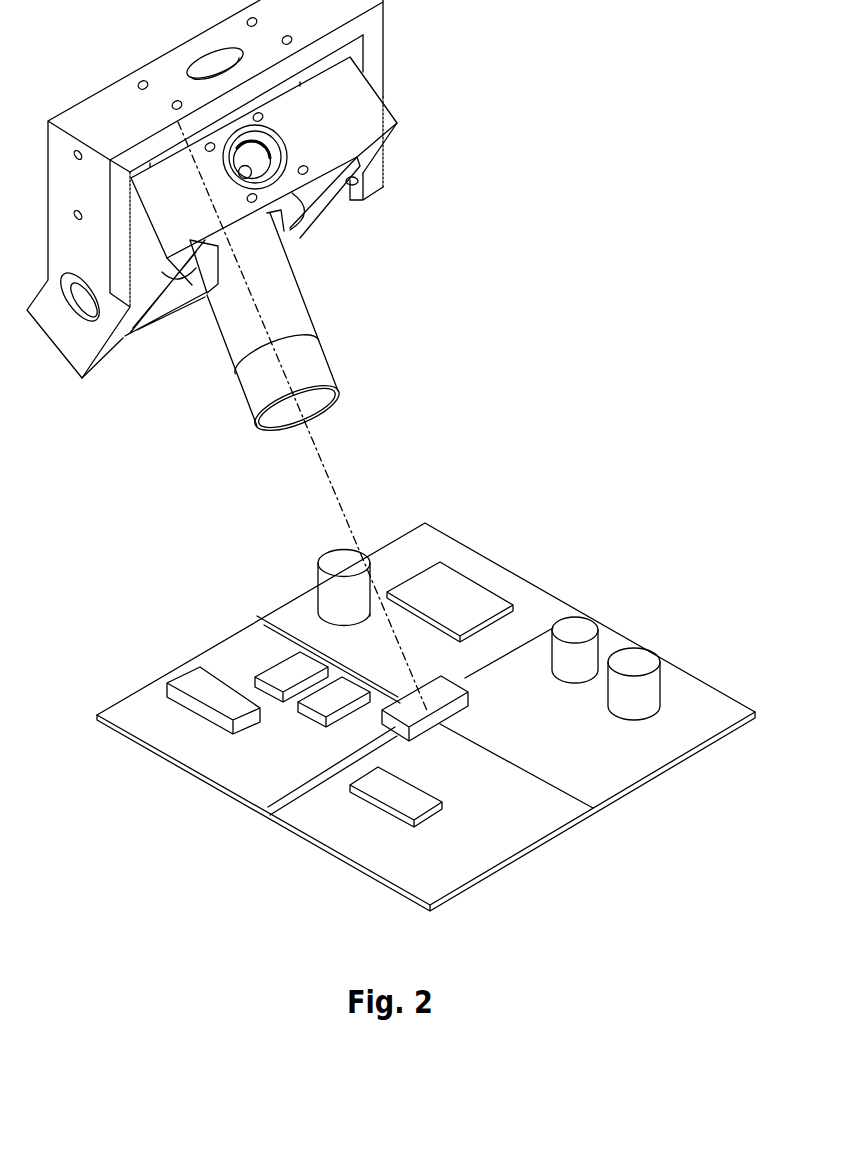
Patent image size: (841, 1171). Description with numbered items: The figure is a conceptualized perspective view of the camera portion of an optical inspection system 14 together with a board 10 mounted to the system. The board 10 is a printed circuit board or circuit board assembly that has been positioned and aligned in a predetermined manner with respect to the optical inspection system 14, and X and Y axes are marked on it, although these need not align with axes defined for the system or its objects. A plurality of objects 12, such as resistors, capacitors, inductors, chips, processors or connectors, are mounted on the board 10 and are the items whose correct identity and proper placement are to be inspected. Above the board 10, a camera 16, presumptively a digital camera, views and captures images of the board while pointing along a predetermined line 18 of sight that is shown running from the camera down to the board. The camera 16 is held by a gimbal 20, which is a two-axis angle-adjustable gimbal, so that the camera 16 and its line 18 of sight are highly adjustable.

The board 10 is at (207, 634).
The objects 12 is at (487, 595).
The optical inspection system 14 is at (517, 200).
The camera 16 is at (338, 334).
The line of sight 18 is at (328, 482).
The gimbal 20 is at (400, 63).